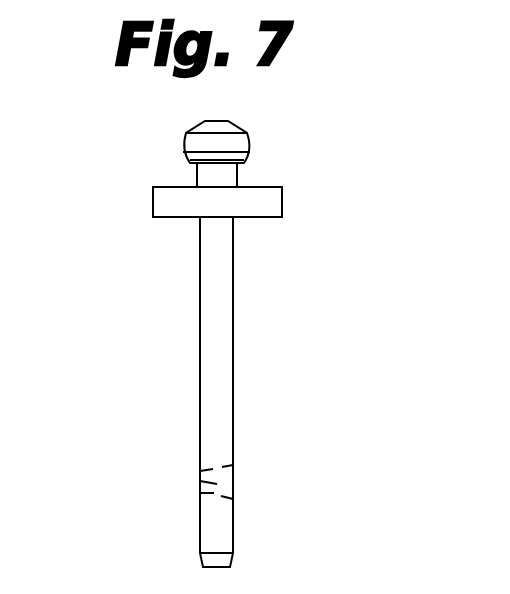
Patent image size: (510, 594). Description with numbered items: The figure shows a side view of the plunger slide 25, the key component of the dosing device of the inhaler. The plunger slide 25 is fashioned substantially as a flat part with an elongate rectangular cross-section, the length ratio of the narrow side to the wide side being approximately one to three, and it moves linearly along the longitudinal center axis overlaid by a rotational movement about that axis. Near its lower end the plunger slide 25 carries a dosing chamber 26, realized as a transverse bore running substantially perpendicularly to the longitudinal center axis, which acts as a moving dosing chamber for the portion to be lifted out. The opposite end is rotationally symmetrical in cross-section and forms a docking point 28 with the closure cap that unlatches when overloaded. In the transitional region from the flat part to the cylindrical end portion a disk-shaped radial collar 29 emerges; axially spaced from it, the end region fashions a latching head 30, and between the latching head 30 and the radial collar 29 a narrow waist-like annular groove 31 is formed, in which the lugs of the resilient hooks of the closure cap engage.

The plunger slide 25 is at (128, 392).
The dosing chamber 26 is at (200, 480).
The docking point 28 is at (245, 126).
The radial collar 29 is at (271, 195).
The latching head 30 is at (203, 143).
The annular groove 31 is at (210, 175).